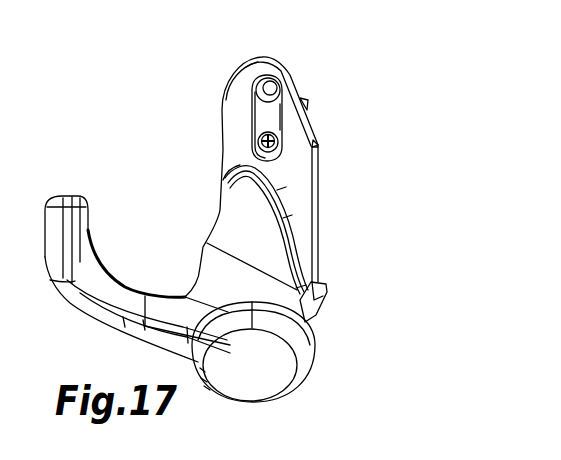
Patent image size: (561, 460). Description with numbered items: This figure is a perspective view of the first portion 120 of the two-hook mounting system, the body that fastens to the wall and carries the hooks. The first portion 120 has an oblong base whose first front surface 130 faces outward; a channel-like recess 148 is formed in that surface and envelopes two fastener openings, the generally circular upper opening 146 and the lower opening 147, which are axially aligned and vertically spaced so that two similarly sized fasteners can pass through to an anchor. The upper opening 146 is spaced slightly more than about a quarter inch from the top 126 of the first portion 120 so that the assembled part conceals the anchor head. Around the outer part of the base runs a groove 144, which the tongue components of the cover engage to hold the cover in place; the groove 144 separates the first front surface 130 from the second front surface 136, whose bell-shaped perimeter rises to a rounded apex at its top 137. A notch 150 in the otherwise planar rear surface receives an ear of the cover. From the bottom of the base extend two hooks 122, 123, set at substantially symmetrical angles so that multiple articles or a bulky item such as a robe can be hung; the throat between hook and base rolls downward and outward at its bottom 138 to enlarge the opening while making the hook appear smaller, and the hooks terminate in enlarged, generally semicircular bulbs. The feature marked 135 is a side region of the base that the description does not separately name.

The first portion 120 is at (115, 136).
The hook 122 is at (58, 197).
The hook 123 is at (288, 375).
The top 126 is at (270, 60).
The first front surface 130 is at (237, 87).
The side wall 135 is at (318, 232).
The second front surface 136 is at (245, 213).
The top of second front surface 137 is at (230, 163).
The bottom of throat 138 is at (108, 288).
The groove 144 is at (288, 188).
The upper fastener opening 146 is at (257, 98).
The lower fastener opening 147 is at (257, 147).
The recess 148 is at (265, 115).
The notch 150 is at (318, 142).